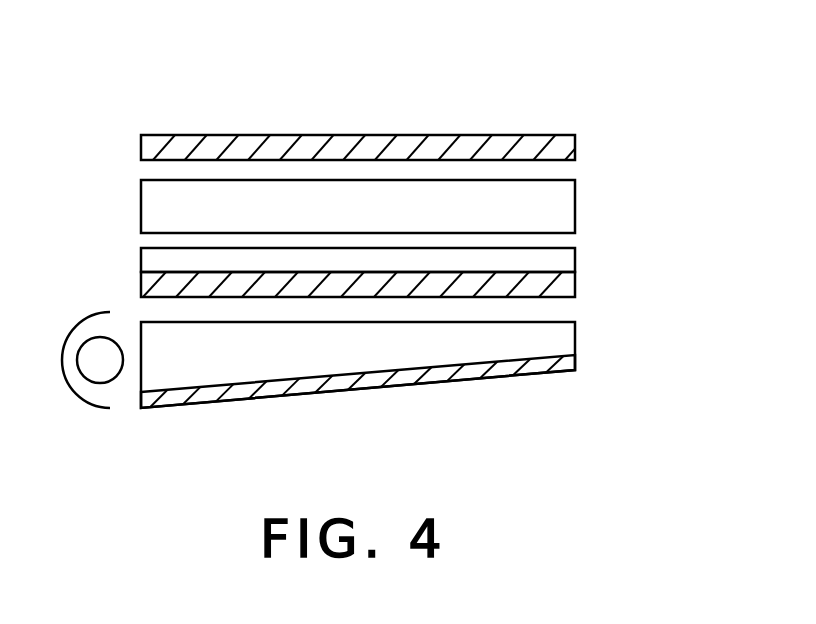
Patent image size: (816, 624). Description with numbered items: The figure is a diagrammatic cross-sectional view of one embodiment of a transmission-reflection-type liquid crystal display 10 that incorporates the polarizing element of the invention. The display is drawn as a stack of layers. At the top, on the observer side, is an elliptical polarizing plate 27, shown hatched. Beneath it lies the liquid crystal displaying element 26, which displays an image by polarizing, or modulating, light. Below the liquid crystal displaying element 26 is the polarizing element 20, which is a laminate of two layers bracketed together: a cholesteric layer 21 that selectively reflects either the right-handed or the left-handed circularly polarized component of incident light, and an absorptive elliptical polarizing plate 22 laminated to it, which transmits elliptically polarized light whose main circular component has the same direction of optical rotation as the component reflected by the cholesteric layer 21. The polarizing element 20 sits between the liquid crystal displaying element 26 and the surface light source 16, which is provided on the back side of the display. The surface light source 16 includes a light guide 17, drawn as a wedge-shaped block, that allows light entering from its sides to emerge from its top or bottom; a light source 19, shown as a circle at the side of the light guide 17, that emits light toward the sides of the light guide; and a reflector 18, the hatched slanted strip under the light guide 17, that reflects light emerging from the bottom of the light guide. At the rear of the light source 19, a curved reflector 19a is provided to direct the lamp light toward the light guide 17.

The transmission-reflection-type liquid crystal display 10 is at (581, 78).
The surface light source 16 is at (438, 375).
The light guide 17 is at (558, 337).
The reflector 18 is at (568, 367).
The light source 19 is at (108, 367).
The reflector 19a is at (108, 311).
The polarizing element 20 is at (422, 278).
The cholesteric layer 21 is at (560, 261).
The absorptive elliptical polarizing plate 22 is at (393, 291).
The liquid crystal displaying element 26 is at (567, 203).
The elliptical polarizing plate 27 is at (566, 147).